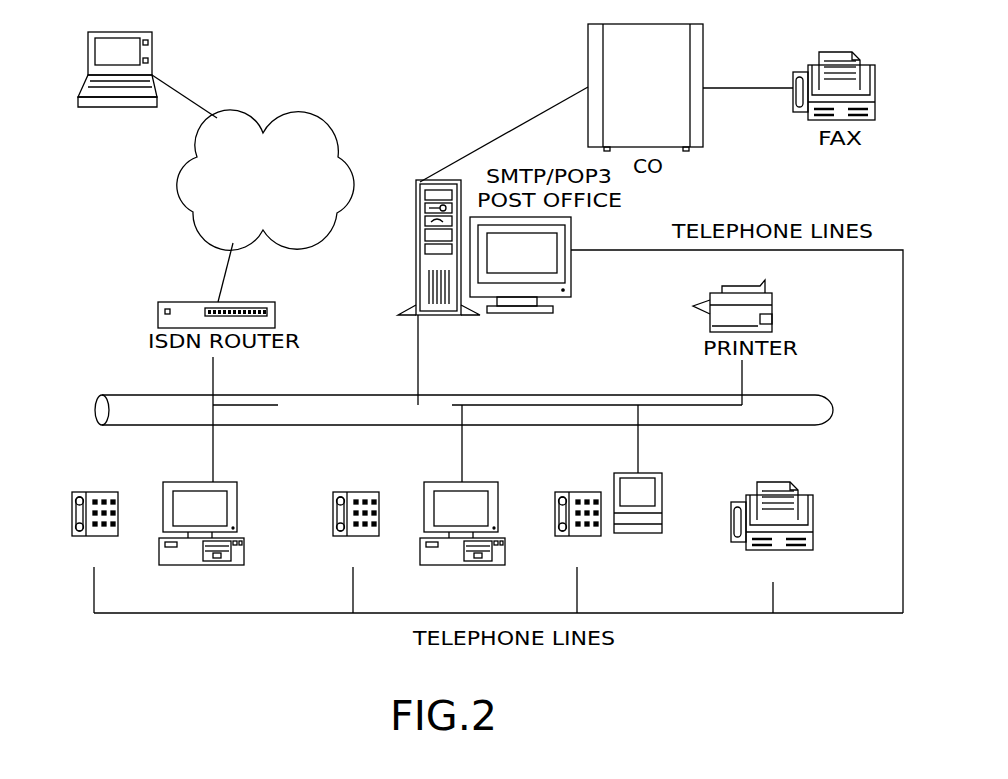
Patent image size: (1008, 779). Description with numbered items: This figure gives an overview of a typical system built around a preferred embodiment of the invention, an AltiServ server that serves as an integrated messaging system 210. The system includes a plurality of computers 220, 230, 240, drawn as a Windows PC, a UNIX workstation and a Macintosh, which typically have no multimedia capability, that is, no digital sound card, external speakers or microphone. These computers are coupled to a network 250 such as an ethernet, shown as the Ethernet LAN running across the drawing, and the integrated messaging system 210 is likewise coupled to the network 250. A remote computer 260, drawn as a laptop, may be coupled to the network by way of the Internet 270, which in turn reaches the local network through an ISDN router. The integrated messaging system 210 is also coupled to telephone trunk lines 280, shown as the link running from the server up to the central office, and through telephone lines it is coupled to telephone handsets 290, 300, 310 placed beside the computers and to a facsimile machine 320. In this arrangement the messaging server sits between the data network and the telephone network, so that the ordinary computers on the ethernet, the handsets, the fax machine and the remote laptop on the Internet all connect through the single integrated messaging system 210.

The integrated messaging system 210 is at (567, 295).
The computer 220 is at (160, 490).
The computer 230 is at (425, 490).
The computer 240 is at (662, 515).
The network 250 is at (828, 423).
The remote computer 260 is at (152, 52).
The Internet 270 is at (341, 154).
The telephone trunk lines 280 is at (505, 138).
The telephone handset 290 is at (100, 492).
The telephone handset 300 is at (361, 492).
The telephone handset 310 is at (582, 492).
The facsimile machine 320 is at (813, 515).